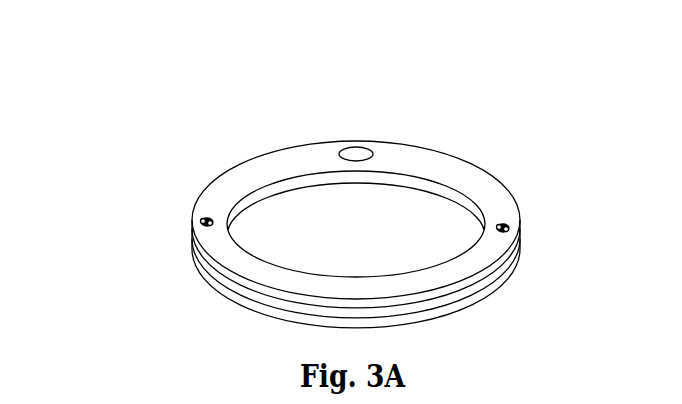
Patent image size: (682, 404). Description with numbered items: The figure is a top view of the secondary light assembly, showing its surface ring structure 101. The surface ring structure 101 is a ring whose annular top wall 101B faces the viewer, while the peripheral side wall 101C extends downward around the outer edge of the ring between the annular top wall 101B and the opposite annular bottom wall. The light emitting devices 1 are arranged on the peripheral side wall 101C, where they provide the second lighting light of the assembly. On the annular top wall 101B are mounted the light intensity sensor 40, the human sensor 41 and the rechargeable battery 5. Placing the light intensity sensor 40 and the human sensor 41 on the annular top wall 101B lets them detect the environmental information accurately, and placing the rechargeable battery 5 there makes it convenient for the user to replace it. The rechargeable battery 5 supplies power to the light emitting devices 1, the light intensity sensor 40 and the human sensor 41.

The surface ring structure 101 is at (475, 146).
The annular top wall 101B is at (228, 255).
The peripheral side wall 101C is at (240, 295).
The light emitting devices 1 is at (485, 287).
The rechargeable battery 5 is at (352, 151).
The light intensity sensor 40 is at (205, 220).
The human sensor 41 is at (505, 230).